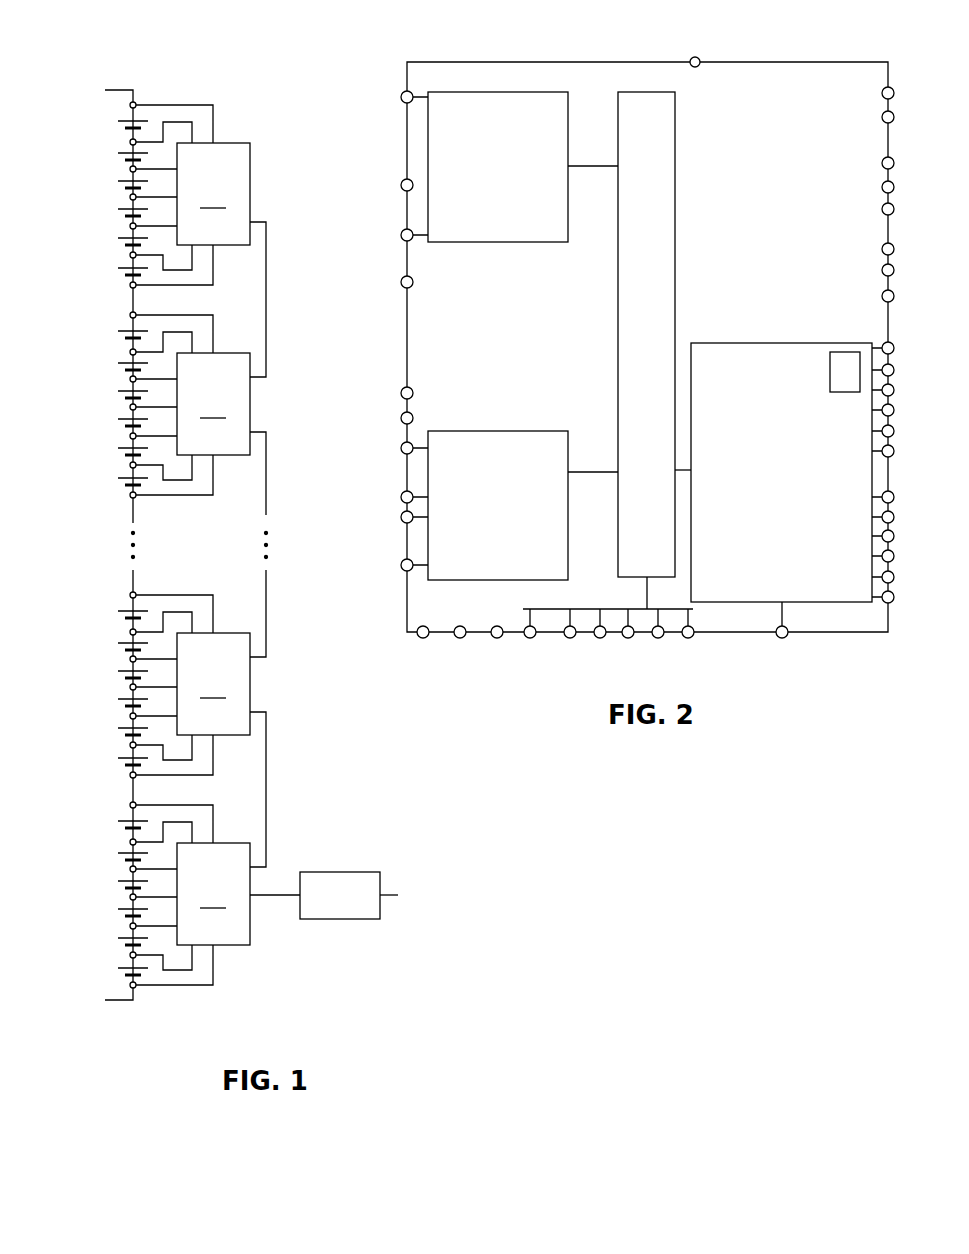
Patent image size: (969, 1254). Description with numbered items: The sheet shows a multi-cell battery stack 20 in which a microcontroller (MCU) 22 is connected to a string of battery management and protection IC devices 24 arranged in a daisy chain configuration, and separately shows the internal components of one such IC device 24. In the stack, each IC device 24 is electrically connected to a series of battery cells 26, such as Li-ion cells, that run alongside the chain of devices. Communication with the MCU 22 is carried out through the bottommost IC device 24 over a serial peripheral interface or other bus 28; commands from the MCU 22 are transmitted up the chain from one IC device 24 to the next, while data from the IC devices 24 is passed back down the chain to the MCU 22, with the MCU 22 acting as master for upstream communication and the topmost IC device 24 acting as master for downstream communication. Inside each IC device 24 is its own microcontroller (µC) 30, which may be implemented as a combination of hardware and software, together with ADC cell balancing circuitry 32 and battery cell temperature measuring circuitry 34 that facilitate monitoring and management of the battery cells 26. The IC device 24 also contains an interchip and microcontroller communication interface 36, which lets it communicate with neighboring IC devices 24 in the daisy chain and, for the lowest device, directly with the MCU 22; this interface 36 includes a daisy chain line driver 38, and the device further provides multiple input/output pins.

In FIG. 1, the multi-cell battery stack 20 is at (282, 118).
In FIG. 1, the microcontroller (MCU) 22 is at (360, 872).
In FIG. 1, the battery management and protection IC device 24 is at (199, 545).
In FIG. 2, the battery management and protection IC device 24 is at (828, 32).
In FIG. 1, the battery cells 26 is at (104, 938).
In FIG. 1, the bus 28 is at (285, 900).
In FIG. 2, the microcontroller (µC) 30 is at (675, 210).
In FIG. 2, the ADC cell balancing circuitry 32 is at (520, 242).
In FIG. 2, the battery cell temperature measuring circuitry 34 is at (520, 431).
In FIG. 2, the interchip and microcontroller communication interface 36 is at (740, 343).
In FIG. 2, the daisy chain line driver 38 is at (845, 352).